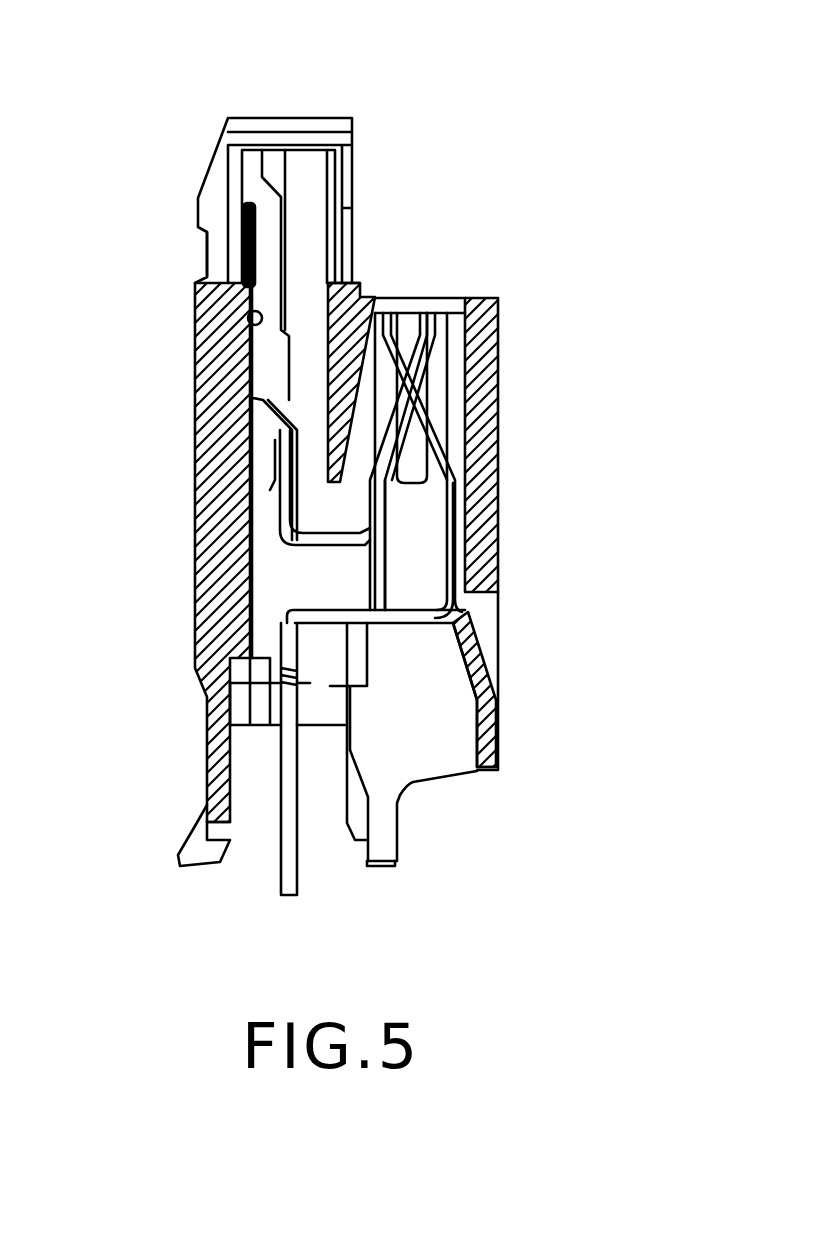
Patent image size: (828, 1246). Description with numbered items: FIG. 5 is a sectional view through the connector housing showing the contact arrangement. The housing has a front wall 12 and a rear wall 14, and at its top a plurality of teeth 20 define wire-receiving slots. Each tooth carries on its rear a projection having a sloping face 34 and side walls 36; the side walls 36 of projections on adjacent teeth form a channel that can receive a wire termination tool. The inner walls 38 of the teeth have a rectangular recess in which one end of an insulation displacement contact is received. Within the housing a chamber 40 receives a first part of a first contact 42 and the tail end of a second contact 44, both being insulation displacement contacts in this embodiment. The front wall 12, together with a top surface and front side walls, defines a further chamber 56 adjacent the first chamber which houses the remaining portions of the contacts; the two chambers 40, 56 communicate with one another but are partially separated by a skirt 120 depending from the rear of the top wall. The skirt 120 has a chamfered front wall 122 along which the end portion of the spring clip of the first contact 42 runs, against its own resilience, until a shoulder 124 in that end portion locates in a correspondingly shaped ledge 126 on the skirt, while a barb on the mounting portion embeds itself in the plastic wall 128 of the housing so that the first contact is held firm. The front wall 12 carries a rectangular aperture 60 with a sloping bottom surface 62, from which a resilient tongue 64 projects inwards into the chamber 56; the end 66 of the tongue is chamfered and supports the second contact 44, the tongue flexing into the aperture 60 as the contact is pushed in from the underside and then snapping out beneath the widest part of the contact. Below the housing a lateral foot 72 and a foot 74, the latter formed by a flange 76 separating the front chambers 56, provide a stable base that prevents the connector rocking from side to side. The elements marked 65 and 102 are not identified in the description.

The front wall 12 is at (498, 430).
The rear wall 14 is at (195, 500).
The teeth 20 is at (290, 119).
The sloping face 34 is at (200, 173).
The side walls 36 is at (215, 207).
The inner walls 38 is at (248, 318).
The chamber 40 is at (255, 423).
The first contact 42 is at (210, 265).
The second contact 44 is at (288, 746).
The chamber 56 is at (440, 600).
The rectangular aperture 60 is at (498, 637).
The sloping bottom surface 62 is at (498, 657).
The tongue 64 is at (458, 640).
The contact cross bar 65 is at (498, 610).
The end of the tongue 66 is at (207, 780).
The lateral foot 72 is at (195, 870).
The foot 74 is at (385, 867).
The flange 76 is at (413, 766).
The contact arm 102 is at (270, 240).
The skirt 120 is at (353, 287).
The chamfered front wall 122 is at (330, 373).
The shoulder 124 is at (345, 452).
The ledge 126 is at (397, 313).
The plastic wall 128 is at (415, 305).